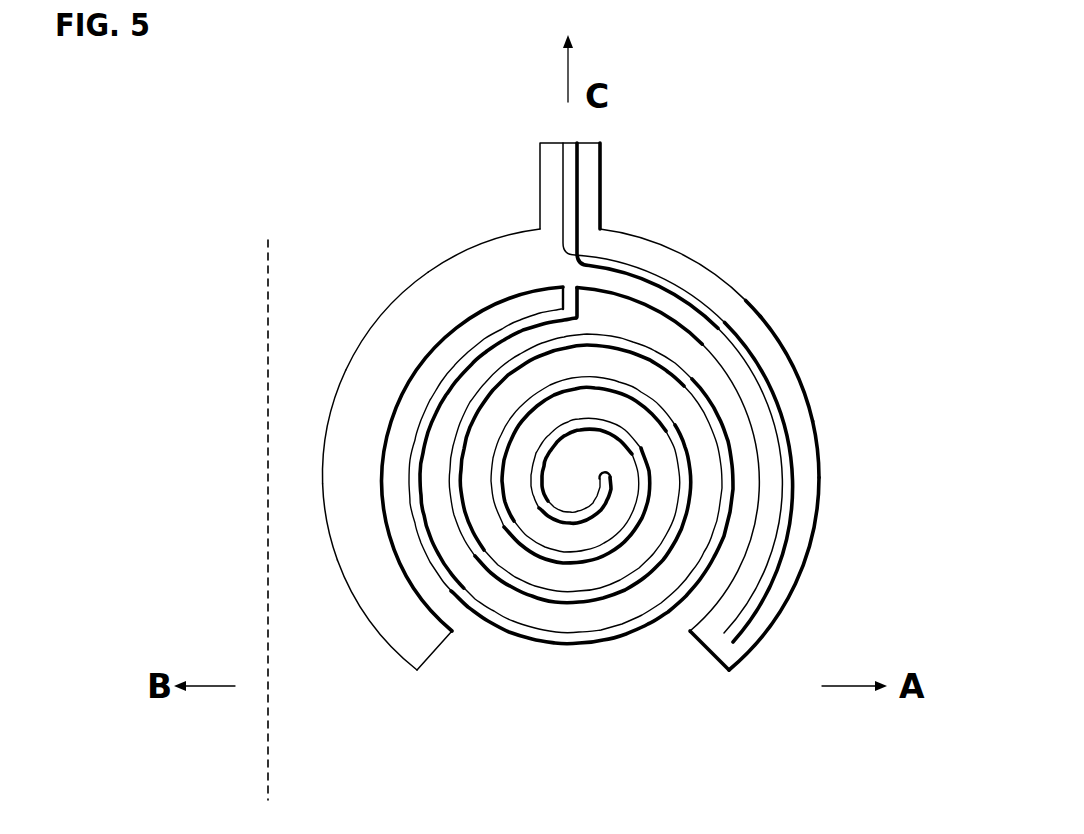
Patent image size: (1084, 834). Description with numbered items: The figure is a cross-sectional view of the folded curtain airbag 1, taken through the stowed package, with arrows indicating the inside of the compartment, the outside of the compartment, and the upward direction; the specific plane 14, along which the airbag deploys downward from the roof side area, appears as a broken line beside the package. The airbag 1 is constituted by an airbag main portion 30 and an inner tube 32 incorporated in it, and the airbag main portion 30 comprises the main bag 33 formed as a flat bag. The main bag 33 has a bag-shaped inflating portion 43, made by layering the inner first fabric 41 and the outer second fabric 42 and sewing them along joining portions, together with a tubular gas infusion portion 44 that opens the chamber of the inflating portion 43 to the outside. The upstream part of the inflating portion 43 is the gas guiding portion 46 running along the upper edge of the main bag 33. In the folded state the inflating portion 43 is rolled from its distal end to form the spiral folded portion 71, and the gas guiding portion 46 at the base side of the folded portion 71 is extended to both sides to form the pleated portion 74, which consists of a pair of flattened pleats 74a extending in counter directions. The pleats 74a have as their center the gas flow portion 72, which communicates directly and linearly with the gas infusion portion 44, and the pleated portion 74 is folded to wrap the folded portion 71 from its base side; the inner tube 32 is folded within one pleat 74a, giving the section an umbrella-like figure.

The airbag 1 is at (337, 183).
The specific plane 14 is at (272, 745).
The airbag main portion 30 is at (452, 243).
The inner tube 32 is at (780, 397).
The main bag 33 is at (405, 287).
The first fabric 41 is at (715, 270).
The second fabric 42 is at (363, 327).
The inflating portion 43 is at (335, 472).
The gas infusion portion 44 is at (540, 155).
The gas guiding portion 46 is at (530, 258).
The folded portion 71 is at (697, 385).
The gas flow portion 72 is at (570, 278).
The pleated portion 74 is at (812, 522).
The pleats 74a is at (330, 400).